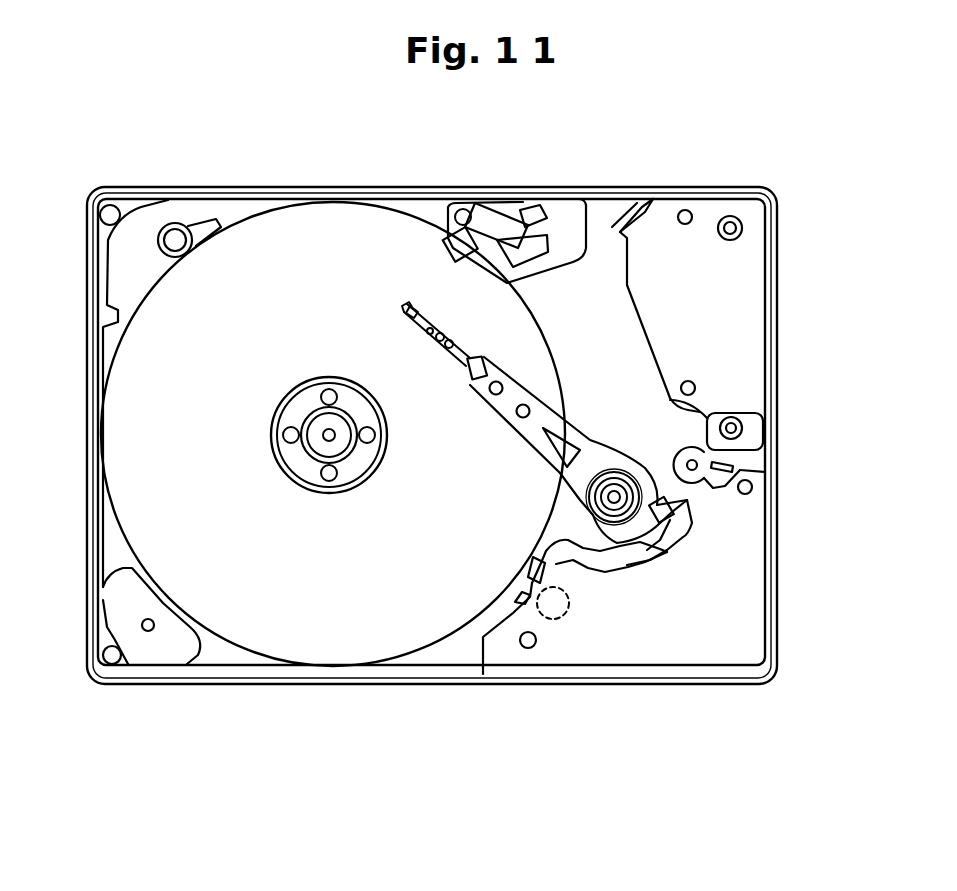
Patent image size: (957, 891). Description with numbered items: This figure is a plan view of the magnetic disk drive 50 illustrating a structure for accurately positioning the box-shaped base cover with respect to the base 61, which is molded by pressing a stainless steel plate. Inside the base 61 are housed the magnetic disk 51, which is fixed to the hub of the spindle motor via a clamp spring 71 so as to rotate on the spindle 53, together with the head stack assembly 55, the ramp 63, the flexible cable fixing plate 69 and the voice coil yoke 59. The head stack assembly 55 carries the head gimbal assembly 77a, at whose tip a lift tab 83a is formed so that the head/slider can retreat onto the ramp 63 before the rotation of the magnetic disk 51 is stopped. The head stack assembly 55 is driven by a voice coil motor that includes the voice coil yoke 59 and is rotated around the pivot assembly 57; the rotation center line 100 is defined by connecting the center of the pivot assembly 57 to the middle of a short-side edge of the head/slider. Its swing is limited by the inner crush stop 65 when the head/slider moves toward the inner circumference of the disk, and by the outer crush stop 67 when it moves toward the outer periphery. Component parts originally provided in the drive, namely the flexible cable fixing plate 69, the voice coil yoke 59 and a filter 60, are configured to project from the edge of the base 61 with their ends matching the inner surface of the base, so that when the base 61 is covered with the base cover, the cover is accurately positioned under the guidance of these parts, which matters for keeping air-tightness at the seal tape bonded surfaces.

The magnetic disk drive 50 is at (439, 718).
The magnetic disk 51 is at (345, 203).
The spindle 53 is at (329, 435).
The head stack assembly 55 is at (551, 460).
The pivot assembly 57 is at (618, 500).
The voice coil yoke 59 is at (756, 583).
The filter 60 is at (166, 195).
The base 61 is at (492, 197).
The ramp 63 is at (562, 198).
The inner crush stop 65 is at (746, 413).
The outer crush stop 67 is at (560, 621).
The flexible cable fixing plate 69 is at (760, 292).
The clamp spring 71 is at (361, 494).
The head gimbal assembly 77a is at (430, 362).
The lift tab 83a is at (423, 340).
The rotation center line 100 is at (409, 307).